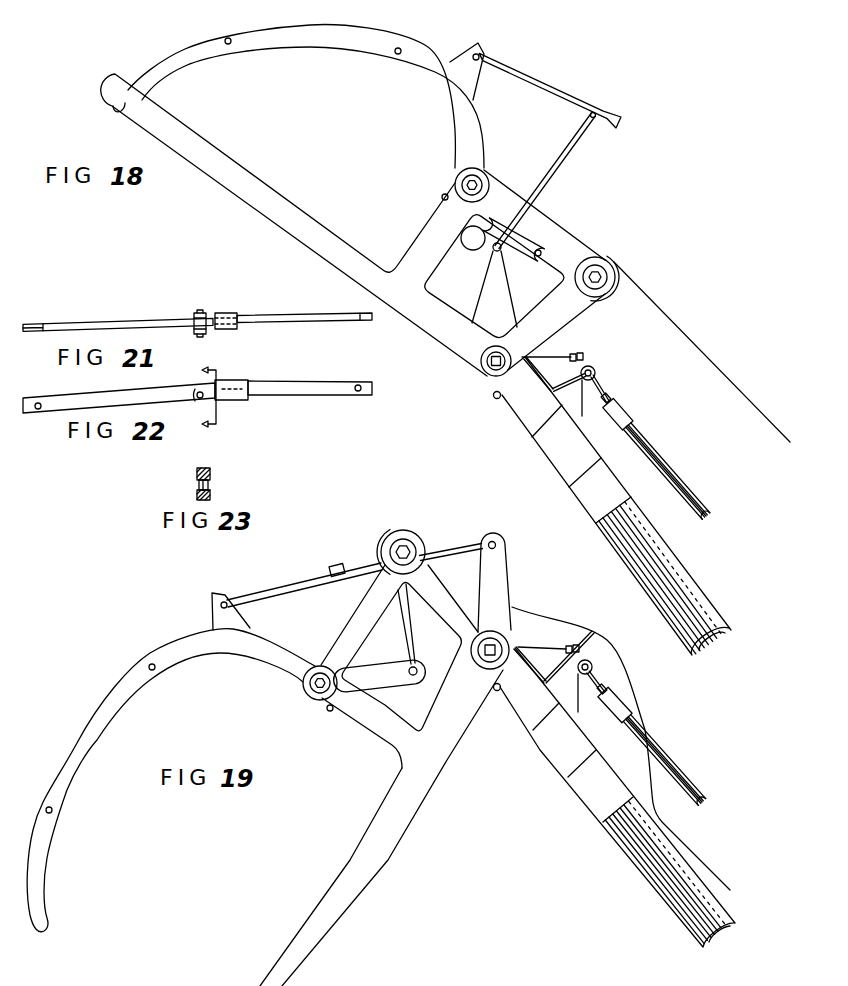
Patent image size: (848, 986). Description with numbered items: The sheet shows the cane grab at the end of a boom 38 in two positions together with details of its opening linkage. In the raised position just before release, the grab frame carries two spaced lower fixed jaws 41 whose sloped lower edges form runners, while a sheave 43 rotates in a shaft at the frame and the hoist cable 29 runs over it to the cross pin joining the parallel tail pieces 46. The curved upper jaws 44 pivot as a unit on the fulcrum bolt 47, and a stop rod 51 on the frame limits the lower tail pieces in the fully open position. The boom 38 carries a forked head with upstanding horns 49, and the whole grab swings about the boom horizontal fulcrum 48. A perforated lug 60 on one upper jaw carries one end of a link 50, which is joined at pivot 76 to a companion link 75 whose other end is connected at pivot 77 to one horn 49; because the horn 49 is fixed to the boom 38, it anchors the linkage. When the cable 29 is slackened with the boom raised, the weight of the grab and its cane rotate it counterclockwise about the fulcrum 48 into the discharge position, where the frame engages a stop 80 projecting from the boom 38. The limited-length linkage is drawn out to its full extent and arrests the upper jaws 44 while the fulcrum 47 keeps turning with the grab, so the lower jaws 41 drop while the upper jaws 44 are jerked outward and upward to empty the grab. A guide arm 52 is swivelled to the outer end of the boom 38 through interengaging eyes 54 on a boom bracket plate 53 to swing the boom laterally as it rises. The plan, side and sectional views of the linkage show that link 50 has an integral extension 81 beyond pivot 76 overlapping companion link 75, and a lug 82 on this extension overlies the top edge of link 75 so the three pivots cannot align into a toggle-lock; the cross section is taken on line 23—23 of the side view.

In FIG. 18, the cable 29 is at (700, 344).
In FIG. 19, the cable 29 is at (690, 848).
In FIG. 18, the boom 38 is at (671, 569).
In FIG. 19, the boom 38 is at (672, 872).
In FIG. 18, the lower fixed jaws 41 is at (330, 252).
In FIG. 19, the lower fixed jaws 41 is at (372, 859).
In FIG. 18, the sheave 43 is at (614, 262).
In FIG. 19, the sheave 43 is at (381, 533).
In FIG. 18, the upper jaws 44 is at (290, 37).
In FIG. 19, the upper jaws 44 is at (75, 763).
In FIG. 18, the tail pieces 46 is at (527, 248).
In FIG. 19, the tail pieces 46 is at (383, 680).
In FIG. 18, the fulcrum bolt 47 is at (461, 184).
In FIG. 19, the fulcrum bolt 47 is at (312, 687).
In FIG. 18, the boom horizontal fulcrum 48 is at (483, 374).
In FIG. 19, the boom horizontal fulcrum 48 is at (471, 652).
In FIG. 18, the horns 49 is at (495, 287).
In FIG. 19, the horns 49 is at (497, 584).
In FIG. 18, the link 50 is at (586, 108).
In FIG. 19, the link 50 is at (279, 587).
In FIG. 21, the link 50 is at (125, 324).
In FIG. 22, the link 50 is at (87, 405).
In FIG. 23, the link 50 is at (195, 473).
In FIG. 18, the stop rod 51 is at (441, 197).
In FIG. 18, the guide arm 52 is at (650, 440).
In FIG. 19, the guide arm 52 is at (670, 757).
In FIG. 18, the boom bracket plate 53 is at (583, 356).
In FIG. 19, the boom bracket plate 53 is at (594, 633).
In FIG. 18, the interengaging eyes 54 is at (596, 373).
In FIG. 19, the interengaging eyes 54 is at (593, 664).
In FIG. 18, the perforated lug 60 is at (470, 80).
In FIG. 19, the perforated lug 60 is at (228, 623).
In FIG. 19, the companion link 75 is at (450, 549).
In FIG. 21, the companion link 75 is at (280, 316).
In FIG. 22, the companion link 75 is at (287, 385).
In FIG. 23, the companion link 75 is at (210, 494).
In FIG. 21, the pivot 76 is at (200, 312).
In FIG. 23, the pivot 76 is at (212, 485).
In FIG. 18, the pivot 77 is at (503, 250).
In FIG. 19, the pivot 77 is at (496, 543).
In FIG. 18, the stop 80 is at (493, 395).
In FIG. 19, the stop 80 is at (497, 691).
In FIG. 22, the integral extension 81 is at (222, 401).
In FIG. 22, the lug 82 is at (251, 362).
In FIG. 22, the section line 23— 23 is at (195, 395).